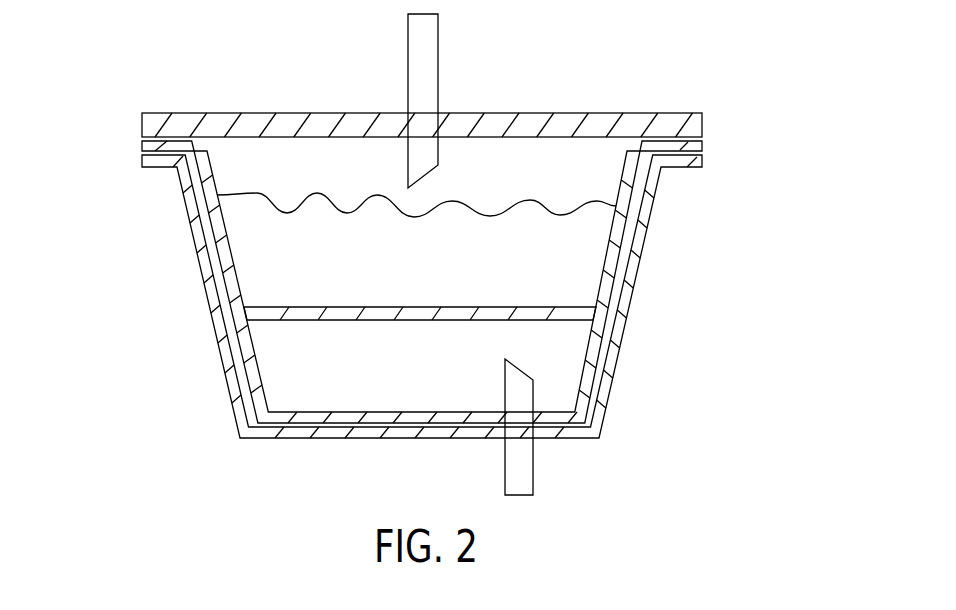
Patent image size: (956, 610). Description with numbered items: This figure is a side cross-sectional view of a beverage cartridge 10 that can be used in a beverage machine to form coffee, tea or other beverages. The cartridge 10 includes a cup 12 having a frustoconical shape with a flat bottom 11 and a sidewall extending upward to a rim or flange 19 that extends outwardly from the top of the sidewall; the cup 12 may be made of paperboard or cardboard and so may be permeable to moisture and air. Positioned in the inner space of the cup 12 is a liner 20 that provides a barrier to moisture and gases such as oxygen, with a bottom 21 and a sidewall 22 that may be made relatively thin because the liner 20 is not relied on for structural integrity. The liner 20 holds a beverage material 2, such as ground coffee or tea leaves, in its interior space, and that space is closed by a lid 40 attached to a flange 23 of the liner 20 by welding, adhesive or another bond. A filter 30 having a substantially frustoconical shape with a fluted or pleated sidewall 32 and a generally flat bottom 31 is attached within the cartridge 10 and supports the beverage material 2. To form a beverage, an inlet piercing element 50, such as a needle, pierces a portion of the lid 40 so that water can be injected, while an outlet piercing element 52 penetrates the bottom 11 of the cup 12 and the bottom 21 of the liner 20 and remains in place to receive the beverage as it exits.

The cartridge 10 is at (732, 72).
The lid 40 is at (594, 124).
The inlet piercing element 50 is at (428, 83).
The cup 12 is at (238, 442).
The flange 19 is at (142, 158).
The sidewall 22 is at (238, 341).
The bottom 11 is at (432, 440).
The filter 30 is at (607, 247).
The flange 23 is at (142, 143).
The sidewall 32 is at (228, 258).
The bottom 21 is at (350, 418).
The bottom 31 is at (413, 312).
The beverage material 2 is at (560, 279).
The liner 20 is at (277, 385).
The outlet piercing element 52 is at (532, 458).